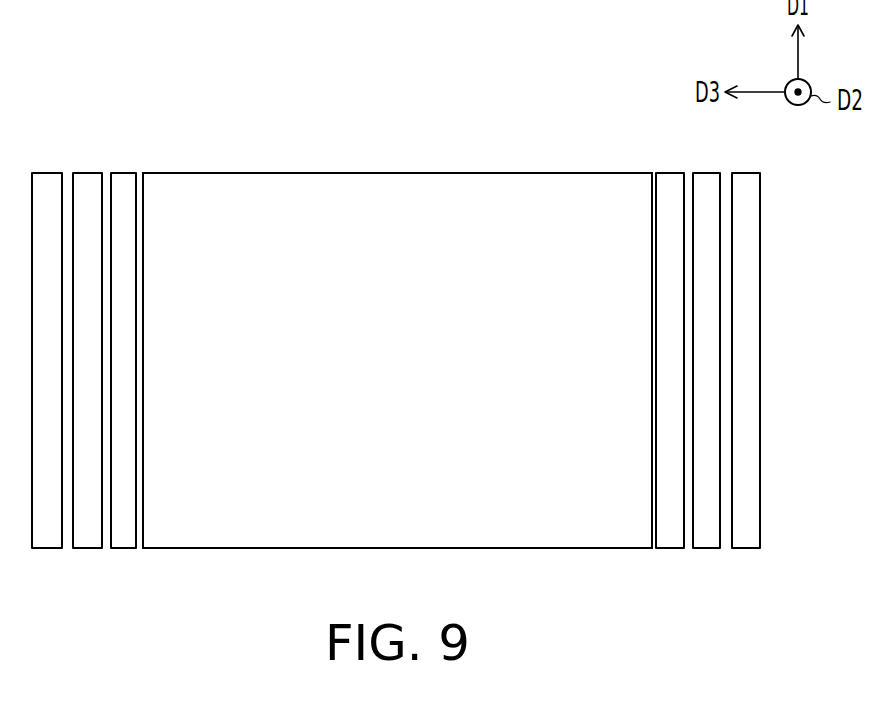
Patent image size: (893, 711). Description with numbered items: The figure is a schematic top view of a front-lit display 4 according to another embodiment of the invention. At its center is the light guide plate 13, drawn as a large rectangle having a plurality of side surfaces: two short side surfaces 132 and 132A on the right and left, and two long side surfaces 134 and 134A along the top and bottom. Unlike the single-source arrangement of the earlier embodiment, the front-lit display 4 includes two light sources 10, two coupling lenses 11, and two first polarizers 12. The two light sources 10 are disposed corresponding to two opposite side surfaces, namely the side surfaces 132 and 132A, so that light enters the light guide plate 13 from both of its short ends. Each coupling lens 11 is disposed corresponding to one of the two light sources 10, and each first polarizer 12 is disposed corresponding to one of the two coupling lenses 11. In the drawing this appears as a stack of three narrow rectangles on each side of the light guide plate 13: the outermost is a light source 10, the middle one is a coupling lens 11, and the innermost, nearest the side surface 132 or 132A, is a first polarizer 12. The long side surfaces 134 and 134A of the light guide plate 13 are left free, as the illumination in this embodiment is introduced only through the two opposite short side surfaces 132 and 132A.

The front-lit display 4 is at (813, 621).
The light source 10 is at (45, 548).
The coupling lens 11 is at (85, 548).
The first polarizer 12 is at (120, 548).
The light guide plate 13 is at (588, 548).
The side surface 132 is at (664, 215).
The side surface 132A is at (142, 215).
The side surface 134 is at (394, 171).
The side surface 134A is at (374, 549).